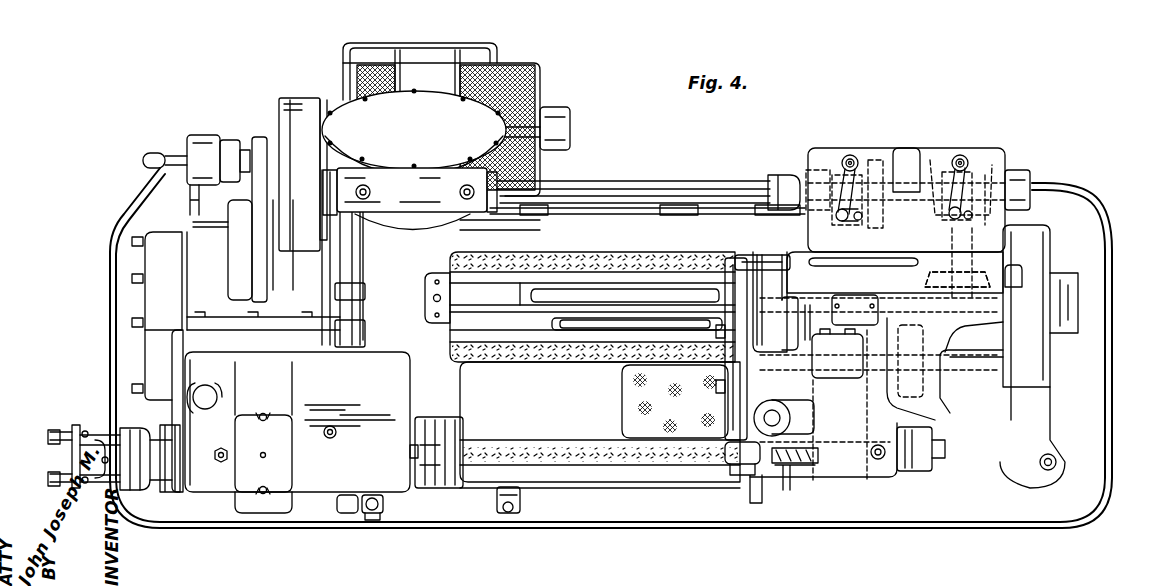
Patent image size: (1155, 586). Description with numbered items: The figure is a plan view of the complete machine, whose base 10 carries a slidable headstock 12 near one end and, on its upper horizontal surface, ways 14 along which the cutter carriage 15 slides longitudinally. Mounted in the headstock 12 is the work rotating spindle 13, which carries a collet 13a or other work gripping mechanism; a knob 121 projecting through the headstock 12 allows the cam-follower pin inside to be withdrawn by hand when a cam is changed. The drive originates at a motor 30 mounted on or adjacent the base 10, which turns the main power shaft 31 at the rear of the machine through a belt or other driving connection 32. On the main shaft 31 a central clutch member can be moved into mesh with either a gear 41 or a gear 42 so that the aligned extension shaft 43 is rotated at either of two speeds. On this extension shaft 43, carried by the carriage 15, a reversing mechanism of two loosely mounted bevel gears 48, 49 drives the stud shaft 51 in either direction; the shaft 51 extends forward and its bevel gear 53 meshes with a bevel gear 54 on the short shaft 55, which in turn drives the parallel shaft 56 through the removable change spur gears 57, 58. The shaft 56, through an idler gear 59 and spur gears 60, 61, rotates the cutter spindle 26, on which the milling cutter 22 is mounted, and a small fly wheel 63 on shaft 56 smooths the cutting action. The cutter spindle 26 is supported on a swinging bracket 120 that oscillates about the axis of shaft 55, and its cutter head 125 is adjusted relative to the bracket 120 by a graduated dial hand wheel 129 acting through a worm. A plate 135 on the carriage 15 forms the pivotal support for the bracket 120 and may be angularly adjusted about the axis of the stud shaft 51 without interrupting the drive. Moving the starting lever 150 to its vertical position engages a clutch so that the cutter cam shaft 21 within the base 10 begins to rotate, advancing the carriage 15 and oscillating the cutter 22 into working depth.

The base 10 is at (185, 228).
The headstock 12 is at (316, 495).
The work rotating spindle 13 is at (452, 417).
The collet 13a is at (385, 515).
The ways 14 is at (635, 262).
The cutter carriage 15 is at (752, 258).
The cutter cam shaft 21 is at (1080, 300).
The milling cutter 22 is at (737, 480).
The cutter spindle 26 is at (870, 478).
The motor 30 is at (546, 78).
The main power shaft 31 is at (638, 183).
The driving connection 32 is at (290, 98).
The gear 41 is at (822, 170).
The gear 42 is at (876, 160).
The extension shaft 43 is at (906, 195).
The bevel gear 48 is at (942, 165).
The bevel gear 49 is at (985, 165).
The stud shaft 51 is at (948, 238).
The bevel gear 53 is at (972, 262).
The bevel gear 54 is at (928, 278).
The short shaft 55 is at (830, 292).
The shaft 56 is at (810, 322).
The spur gear 57 is at (748, 290).
The spur gear 58 is at (758, 300).
The idler gear 59 is at (850, 387).
The spur gear 60 is at (860, 345).
The spur gear 61 is at (838, 478).
The fly wheel 63 is at (936, 445).
The swinging bracket 120 is at (745, 385).
The knob 121 is at (195, 390).
The cutter head 125 is at (945, 392).
The graduated dial hand wheel 129 is at (810, 487).
The plate 135 is at (1010, 262).
The starting lever 150 is at (522, 505).